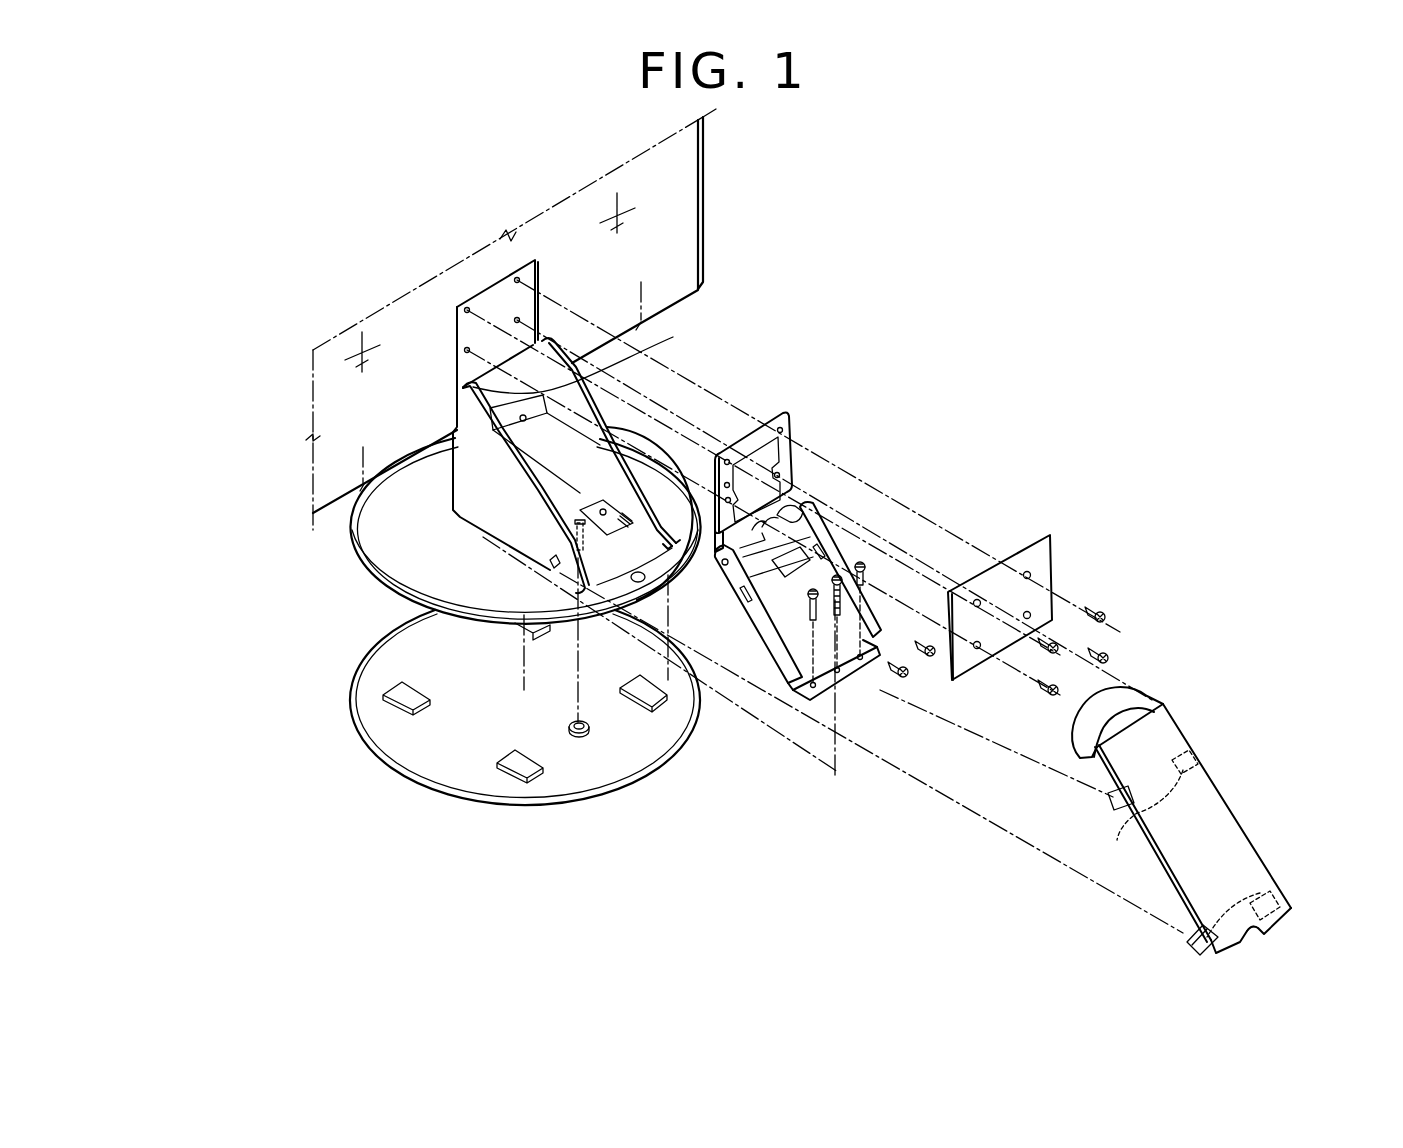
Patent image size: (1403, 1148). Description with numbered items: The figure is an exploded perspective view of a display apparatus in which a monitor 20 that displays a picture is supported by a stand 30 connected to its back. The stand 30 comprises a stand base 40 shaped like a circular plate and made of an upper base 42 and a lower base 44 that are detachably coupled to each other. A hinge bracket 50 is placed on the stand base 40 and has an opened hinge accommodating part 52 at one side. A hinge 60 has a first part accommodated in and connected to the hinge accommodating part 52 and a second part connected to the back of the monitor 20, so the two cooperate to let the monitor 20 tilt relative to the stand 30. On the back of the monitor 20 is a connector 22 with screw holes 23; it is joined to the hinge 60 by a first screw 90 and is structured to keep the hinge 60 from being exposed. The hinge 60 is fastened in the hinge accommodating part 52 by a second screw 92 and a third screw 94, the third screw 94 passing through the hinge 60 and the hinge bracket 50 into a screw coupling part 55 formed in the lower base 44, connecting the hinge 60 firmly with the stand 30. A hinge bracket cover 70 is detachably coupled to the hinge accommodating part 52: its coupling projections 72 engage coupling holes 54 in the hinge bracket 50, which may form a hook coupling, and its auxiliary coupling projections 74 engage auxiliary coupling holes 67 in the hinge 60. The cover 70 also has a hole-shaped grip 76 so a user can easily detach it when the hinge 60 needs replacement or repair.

The monitor 20 is at (290, 480).
The connector 22 is at (993, 563).
The screw holes 23 is at (1028, 572).
The stand 30 is at (285, 726).
The stand base 40 is at (262, 580).
The upper base 42 is at (352, 550).
The lower base 44 is at (350, 690).
The hinge bracket 50 is at (603, 409).
The hinge accommodating part 52 is at (577, 493).
The coupling holes 54 is at (570, 366).
The screw coupling part 55 is at (582, 720).
The hinge 60 is at (827, 532).
The auxiliary coupling holes 67 is at (757, 606).
The hinge bracket cover 70 is at (1223, 780).
The coupling projections 72 is at (1140, 702).
The auxiliary coupling projections 74 is at (1122, 812).
The grip 76 is at (1292, 925).
The first screw 90 is at (1118, 620).
The second screw 92 is at (870, 670).
The third screw 94 is at (836, 590).